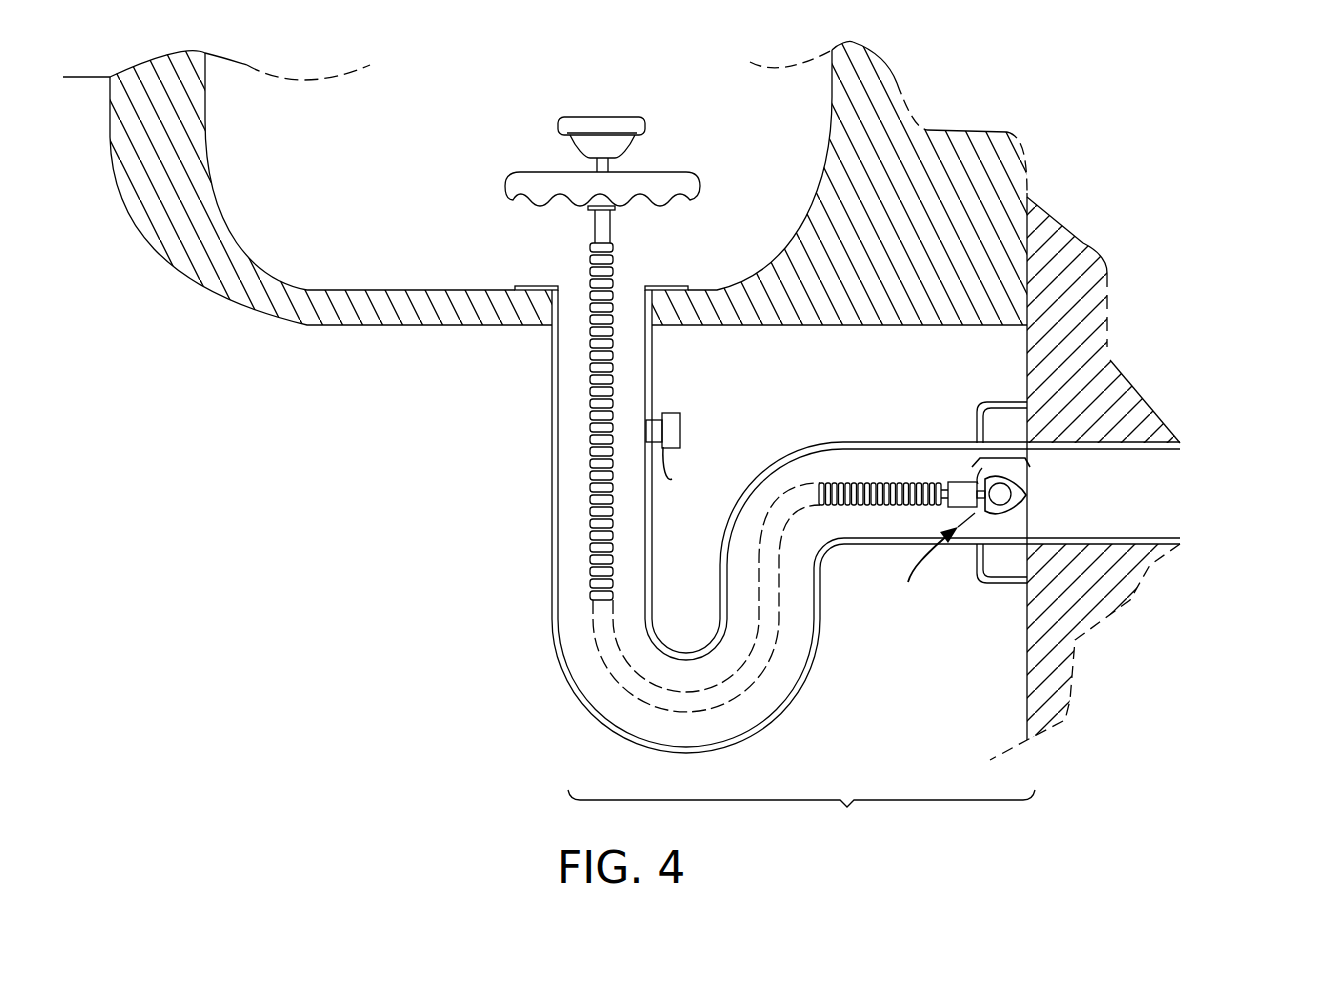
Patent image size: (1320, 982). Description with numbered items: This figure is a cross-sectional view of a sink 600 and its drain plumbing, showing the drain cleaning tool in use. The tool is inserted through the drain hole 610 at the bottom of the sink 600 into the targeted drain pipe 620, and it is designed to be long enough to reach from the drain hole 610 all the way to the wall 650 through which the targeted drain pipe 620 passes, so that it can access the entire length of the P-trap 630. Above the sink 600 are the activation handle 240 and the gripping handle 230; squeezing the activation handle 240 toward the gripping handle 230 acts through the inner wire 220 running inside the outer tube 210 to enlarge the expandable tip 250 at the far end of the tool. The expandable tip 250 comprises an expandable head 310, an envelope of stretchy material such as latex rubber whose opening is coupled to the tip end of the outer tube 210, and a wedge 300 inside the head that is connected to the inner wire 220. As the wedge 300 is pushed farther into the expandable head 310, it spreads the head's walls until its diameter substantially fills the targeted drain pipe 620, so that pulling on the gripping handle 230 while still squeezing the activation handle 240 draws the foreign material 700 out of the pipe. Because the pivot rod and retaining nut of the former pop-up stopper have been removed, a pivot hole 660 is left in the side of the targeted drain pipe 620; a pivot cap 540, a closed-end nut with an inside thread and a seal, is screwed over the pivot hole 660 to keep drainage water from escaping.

The sink 600 is at (242, 297).
The drain hole 610 is at (549, 296).
The targeted drain pipe 620 is at (567, 670).
The P-trap 630 is at (801, 820).
The wall 650 is at (1088, 247).
The pivot hole 660 is at (672, 479).
The pivot cap 540 is at (683, 413).
The outer tube 210 is at (593, 445).
The inner wire 220 is at (612, 163).
The gripping handle 230 is at (700, 178).
The activation handle 240 is at (597, 120).
The expandable tip 250 is at (1002, 458).
The wedge 300 is at (1000, 513).
The expandable head 310 is at (1022, 500).
The foreign material 700 is at (928, 565).